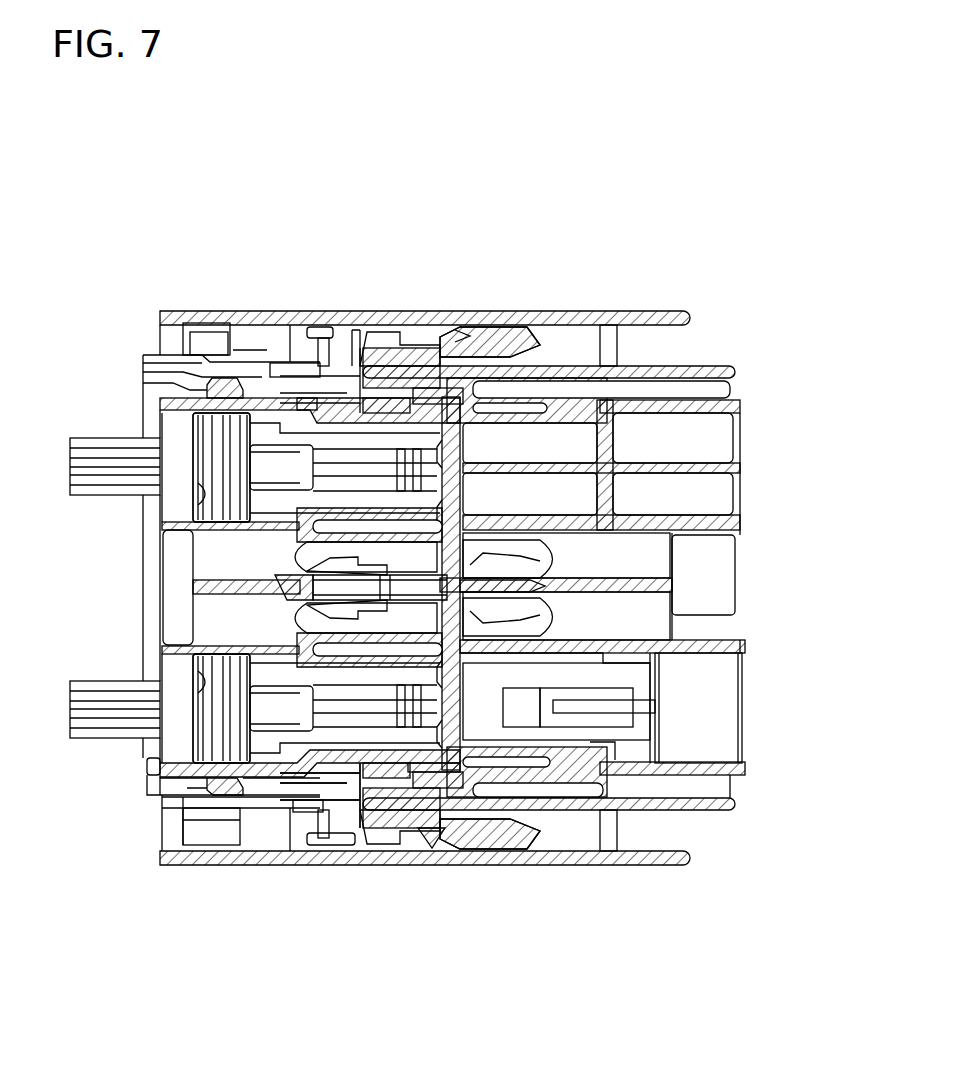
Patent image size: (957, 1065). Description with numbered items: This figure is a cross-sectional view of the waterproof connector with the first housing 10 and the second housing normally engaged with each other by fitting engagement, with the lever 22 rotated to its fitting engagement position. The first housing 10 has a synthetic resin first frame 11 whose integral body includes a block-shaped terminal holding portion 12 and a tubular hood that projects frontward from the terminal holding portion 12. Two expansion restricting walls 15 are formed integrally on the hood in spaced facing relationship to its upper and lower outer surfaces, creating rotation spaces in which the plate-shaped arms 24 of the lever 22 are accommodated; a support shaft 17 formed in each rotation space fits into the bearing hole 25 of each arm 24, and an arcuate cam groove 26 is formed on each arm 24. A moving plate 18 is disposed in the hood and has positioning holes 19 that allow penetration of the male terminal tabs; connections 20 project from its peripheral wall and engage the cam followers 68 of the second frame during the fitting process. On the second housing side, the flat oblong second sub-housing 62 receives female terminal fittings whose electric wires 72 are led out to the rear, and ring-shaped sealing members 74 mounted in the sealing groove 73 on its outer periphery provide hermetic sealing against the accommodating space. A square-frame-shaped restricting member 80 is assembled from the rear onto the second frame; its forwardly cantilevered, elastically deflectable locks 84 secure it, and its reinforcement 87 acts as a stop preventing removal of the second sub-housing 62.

The first housing 10 is at (122, 276).
The first frame 11 is at (758, 318).
The terminal holding portion 12 is at (710, 366).
The expansion restricting wall 15 is at (592, 311).
The support shaft 17 is at (412, 348).
The moving plate 18 is at (468, 652).
The positioning hole 19 is at (455, 716).
The connection 20 is at (333, 331).
The lever 22 is at (470, 334).
The arm 24 is at (527, 345).
The bearing hole 25 is at (432, 840).
The cam groove 26 is at (349, 352).
The second sub-housing 62 is at (270, 476).
The cam follower 68 is at (297, 362).
The electric wire 72 is at (88, 438).
The sealing groove 73 is at (203, 503).
The sealing member 74 is at (207, 471).
The restricting member 80 is at (151, 409).
The lock 84 is at (232, 383).
The reinforcement 87 is at (151, 767).